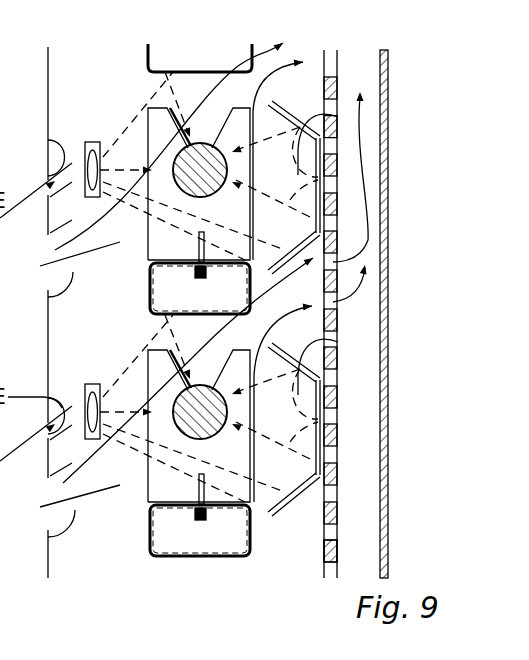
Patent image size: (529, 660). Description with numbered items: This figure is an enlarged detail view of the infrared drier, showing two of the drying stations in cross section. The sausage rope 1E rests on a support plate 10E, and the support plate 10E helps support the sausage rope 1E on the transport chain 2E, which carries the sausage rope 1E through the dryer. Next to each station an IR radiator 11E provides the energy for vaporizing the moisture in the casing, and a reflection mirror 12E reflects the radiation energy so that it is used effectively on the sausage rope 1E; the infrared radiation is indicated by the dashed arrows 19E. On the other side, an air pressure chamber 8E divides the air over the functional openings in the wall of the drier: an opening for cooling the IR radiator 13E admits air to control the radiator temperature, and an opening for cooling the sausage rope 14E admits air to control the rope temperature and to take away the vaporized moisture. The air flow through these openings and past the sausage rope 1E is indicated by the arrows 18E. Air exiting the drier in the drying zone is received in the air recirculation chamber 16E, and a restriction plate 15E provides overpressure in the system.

The sausage rope 1E is at (180, 125).
The transport chain 2E is at (197, 276).
The air pressure chamber 8E is at (52, 76).
The support plate 10E is at (150, 135).
The IR radiator 11E is at (85, 140).
The reflection mirror 12E is at (338, 117).
The opening for cooling IR radiator 13E is at (50, 137).
The opening for cooling sausage rope 14E is at (50, 303).
The restriction plate 15E is at (327, 549).
The air recirculation chamber 16E is at (362, 522).
The arrows 18E is at (380, 250).
The arrows 19E is at (300, 178).